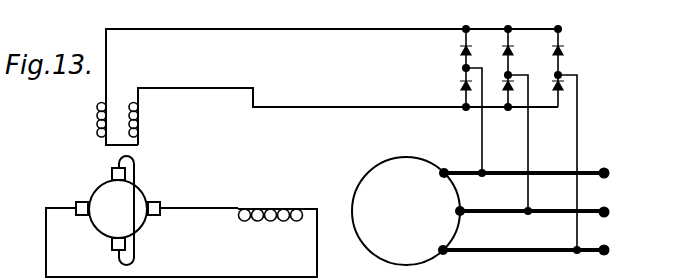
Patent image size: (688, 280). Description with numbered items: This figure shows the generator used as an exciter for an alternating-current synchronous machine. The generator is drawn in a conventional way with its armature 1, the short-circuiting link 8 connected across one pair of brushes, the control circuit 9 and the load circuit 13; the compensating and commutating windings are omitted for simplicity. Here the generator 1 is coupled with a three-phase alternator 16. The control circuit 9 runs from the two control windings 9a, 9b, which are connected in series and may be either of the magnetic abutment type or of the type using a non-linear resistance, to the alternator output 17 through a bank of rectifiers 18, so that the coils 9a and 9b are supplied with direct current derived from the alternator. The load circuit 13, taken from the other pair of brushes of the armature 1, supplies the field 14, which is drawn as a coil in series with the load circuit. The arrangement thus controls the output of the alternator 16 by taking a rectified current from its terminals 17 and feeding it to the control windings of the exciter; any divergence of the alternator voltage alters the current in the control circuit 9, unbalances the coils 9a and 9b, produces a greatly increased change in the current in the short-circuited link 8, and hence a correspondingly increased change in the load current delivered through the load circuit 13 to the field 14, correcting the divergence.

The armature 1 is at (118, 209).
The short-circuiting link 8 is at (137, 176).
The control circuit 9 is at (332, 57).
The control winding 9a is at (139, 126).
The control winding 9b is at (100, 121).
The load circuit 13 is at (213, 206).
The field 14 is at (263, 201).
The three-phase alternator 16 is at (406, 211).
The alternator output 17 is at (616, 180).
The rectifiers 18 is at (565, 55).